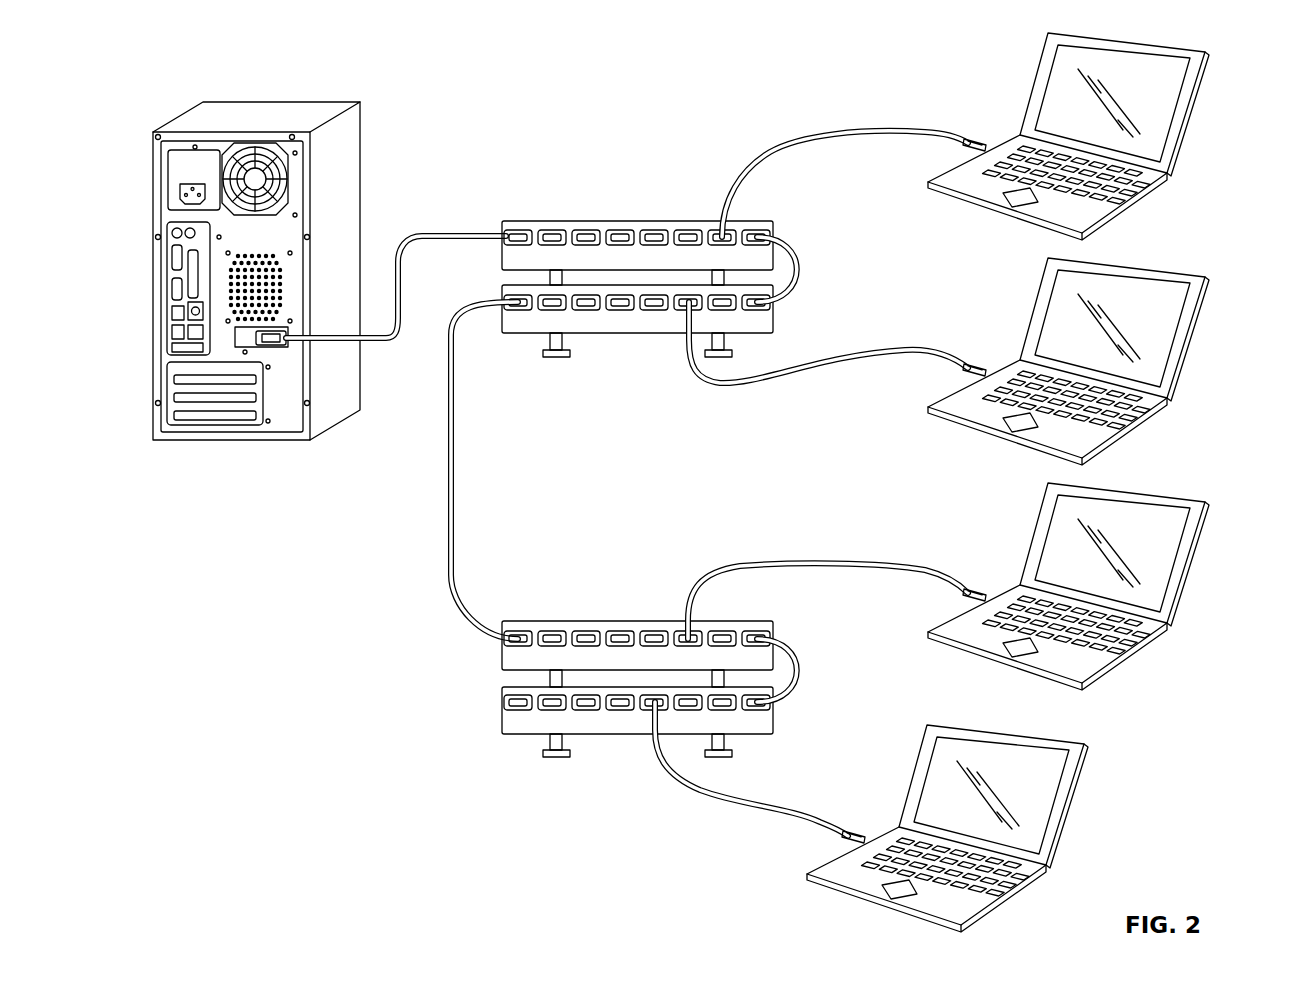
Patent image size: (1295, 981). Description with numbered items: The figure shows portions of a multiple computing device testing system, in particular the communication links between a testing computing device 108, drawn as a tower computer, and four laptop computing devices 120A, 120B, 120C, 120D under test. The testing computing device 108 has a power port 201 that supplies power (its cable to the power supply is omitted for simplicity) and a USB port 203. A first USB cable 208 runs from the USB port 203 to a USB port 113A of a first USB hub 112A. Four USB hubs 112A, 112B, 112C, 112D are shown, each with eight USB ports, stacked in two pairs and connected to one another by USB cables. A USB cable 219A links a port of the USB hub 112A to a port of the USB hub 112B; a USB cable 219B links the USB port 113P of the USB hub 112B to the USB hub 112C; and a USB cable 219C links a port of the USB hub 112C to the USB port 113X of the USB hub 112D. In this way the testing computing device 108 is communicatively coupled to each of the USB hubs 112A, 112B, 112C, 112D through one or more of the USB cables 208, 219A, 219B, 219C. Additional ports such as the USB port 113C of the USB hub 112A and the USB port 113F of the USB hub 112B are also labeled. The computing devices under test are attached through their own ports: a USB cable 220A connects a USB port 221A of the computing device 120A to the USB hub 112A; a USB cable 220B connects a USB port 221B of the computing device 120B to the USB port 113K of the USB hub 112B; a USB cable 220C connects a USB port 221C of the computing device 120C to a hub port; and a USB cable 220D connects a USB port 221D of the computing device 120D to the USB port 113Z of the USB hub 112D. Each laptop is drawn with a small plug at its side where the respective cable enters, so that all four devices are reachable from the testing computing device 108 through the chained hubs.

The testing computing device 108 is at (250, 117).
The power port 201 is at (178, 197).
The USB port 203 is at (293, 342).
The first USB cable 208 is at (392, 345).
The USB hub 112A is at (768, 221).
The USB hub 112B is at (776, 322).
The USB hub 112C is at (761, 620).
The USB hub 112D is at (755, 737).
The USB port 113A is at (522, 231).
The USB port 113C is at (715, 229).
The USB port 113F is at (776, 303).
The USB port 113K is at (677, 313).
The USB port 113P is at (523, 296).
The USB port 113X is at (777, 708).
The USB port 113Z is at (639, 707).
The USB cable 219A is at (800, 264).
The USB cable 219B is at (448, 515).
The USB cable 219C is at (797, 658).
The USB cable 220A is at (829, 133).
The USB cable 220B is at (808, 366).
The USB cable 220C is at (815, 563).
The USB cable 220D is at (727, 800).
The USB port 221A is at (992, 148).
The USB port 221B is at (992, 373).
The USB port 221C is at (992, 598).
The USB port 221D is at (858, 833).
The computing device 120A is at (1182, 45).
The computing device 120B is at (1153, 264).
The computing device 120C is at (1153, 489).
The computing device 120D is at (1040, 735).